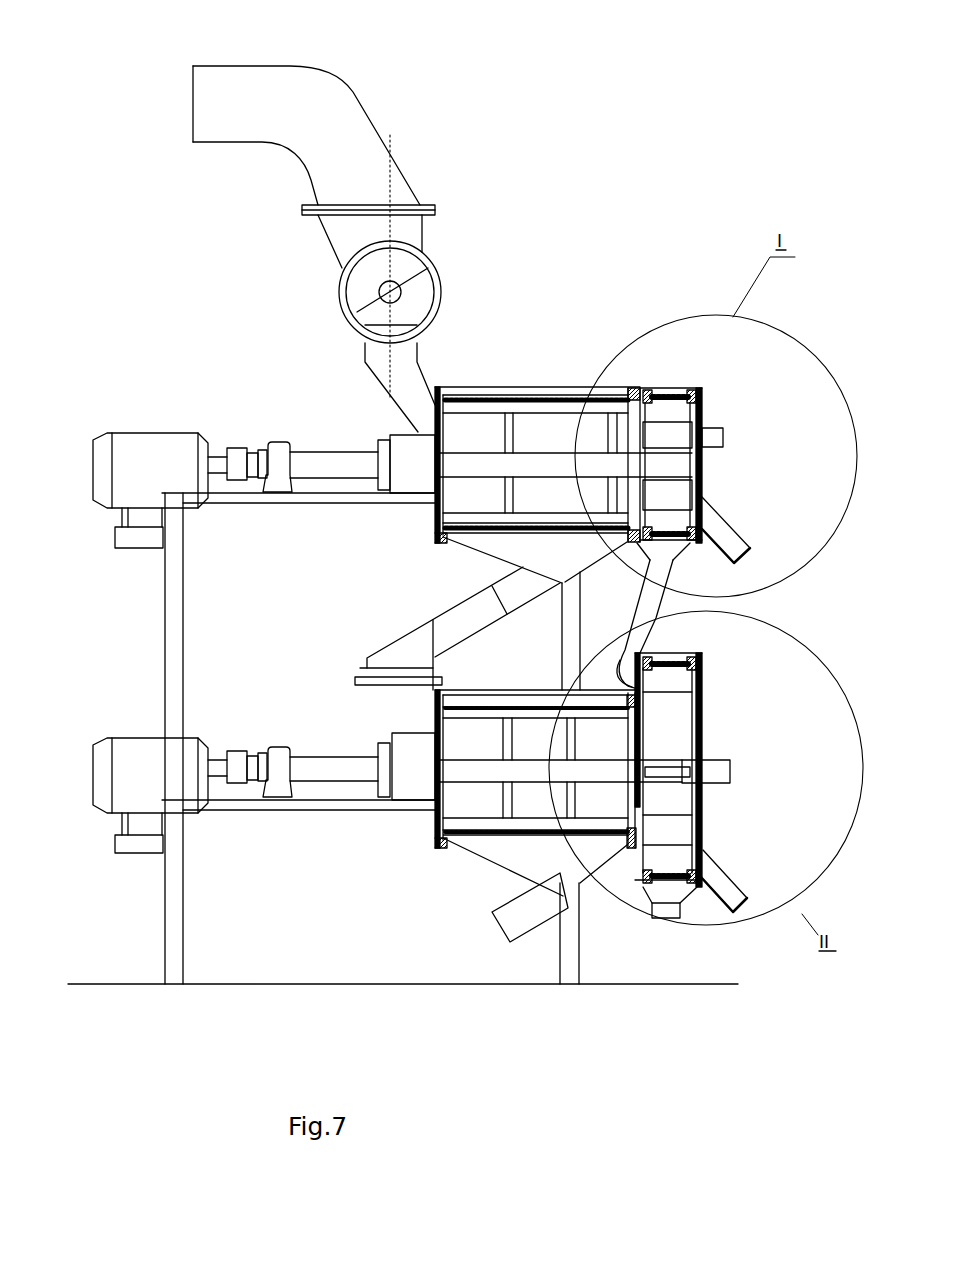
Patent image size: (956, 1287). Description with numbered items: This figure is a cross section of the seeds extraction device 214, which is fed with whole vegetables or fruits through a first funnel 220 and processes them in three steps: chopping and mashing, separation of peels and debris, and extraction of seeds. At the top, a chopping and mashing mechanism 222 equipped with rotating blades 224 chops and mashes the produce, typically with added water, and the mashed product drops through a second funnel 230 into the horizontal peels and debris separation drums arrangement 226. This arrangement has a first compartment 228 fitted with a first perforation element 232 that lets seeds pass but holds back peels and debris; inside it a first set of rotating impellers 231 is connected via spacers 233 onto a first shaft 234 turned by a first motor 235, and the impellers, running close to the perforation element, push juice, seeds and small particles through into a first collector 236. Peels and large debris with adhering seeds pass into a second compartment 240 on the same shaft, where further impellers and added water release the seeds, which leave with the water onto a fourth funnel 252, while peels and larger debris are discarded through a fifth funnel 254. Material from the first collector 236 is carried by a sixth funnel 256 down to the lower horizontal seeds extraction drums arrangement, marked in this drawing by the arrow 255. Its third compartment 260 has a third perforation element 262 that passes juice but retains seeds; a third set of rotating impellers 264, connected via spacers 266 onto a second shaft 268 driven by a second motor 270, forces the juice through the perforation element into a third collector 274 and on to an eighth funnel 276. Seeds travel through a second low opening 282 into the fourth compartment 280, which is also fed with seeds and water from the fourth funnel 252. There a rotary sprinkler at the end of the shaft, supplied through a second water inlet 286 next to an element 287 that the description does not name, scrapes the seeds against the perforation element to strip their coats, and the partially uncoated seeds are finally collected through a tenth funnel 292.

The device 214 is at (250, 260).
The first funnel 220 is at (317, 100).
The chopping and mashing mechanism 222 is at (439, 297).
The rotating blades 224 is at (423, 275).
The horizontal peels and debris separation drums arrangement 226 is at (580, 280).
The first compartment 228 is at (583, 412).
The second funnel 230 is at (365, 347).
The first set of rotating impellers 231 is at (535, 392).
The first perforation element 232 is at (488, 398).
The spacers 233 is at (432, 438).
The first shaft 234 is at (692, 462).
The first motor 235 is at (152, 445).
The first collector 236 is at (640, 597).
The second compartment 240 is at (670, 388).
The fourth funnel 252 is at (650, 603).
The fifth funnel 254 is at (723, 528).
The second drum unit 255 is at (307, 846).
The sixth funnel 256 is at (475, 620).
The third compartment 260 is at (455, 845).
The third perforation element 262 is at (435, 673).
The third set of rotating impellers 264 is at (462, 712).
The spacers 266 is at (573, 797).
The second shaft 268 is at (648, 742).
The second motor 270 is at (118, 788).
The third collector 274 is at (607, 848).
The eighth funnel 276 is at (510, 925).
The fourth compartment 280 is at (705, 670).
The second low opening 282 is at (640, 820).
The second water inlet 286 is at (727, 774).
The coupling 287 is at (642, 767).
The tenth funnel 292 is at (727, 870).